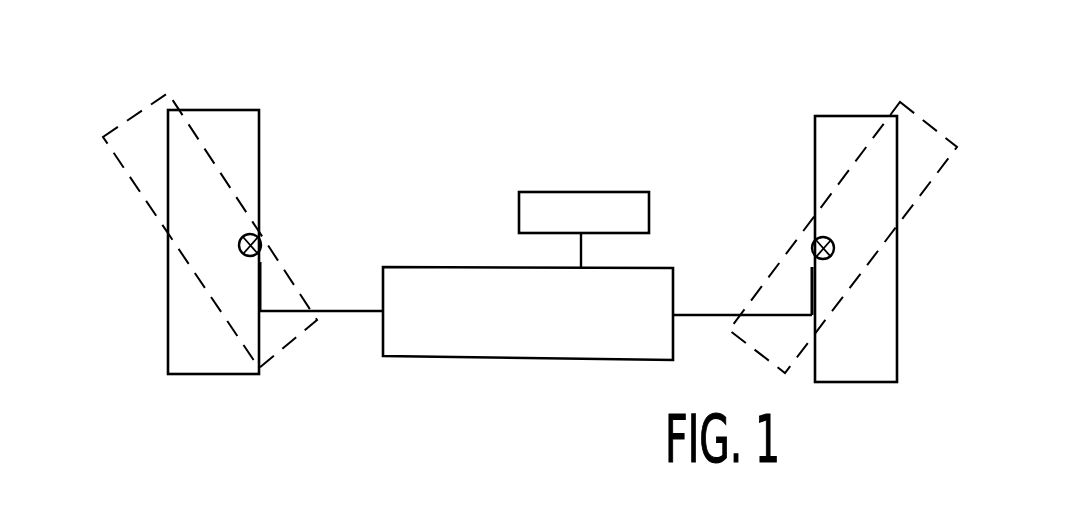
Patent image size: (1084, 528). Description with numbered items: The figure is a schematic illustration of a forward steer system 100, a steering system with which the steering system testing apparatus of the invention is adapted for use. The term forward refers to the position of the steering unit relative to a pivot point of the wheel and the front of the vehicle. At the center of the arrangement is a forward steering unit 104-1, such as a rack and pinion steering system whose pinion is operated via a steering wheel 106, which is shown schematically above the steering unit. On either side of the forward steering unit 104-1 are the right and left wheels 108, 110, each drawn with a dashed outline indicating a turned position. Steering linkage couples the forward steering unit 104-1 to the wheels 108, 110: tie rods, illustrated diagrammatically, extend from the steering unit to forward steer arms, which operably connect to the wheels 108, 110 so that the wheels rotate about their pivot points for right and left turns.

The forward steer system 100 is at (632, 107).
The forward steering unit 104-1 is at (438, 266).
The steering wheel 106 is at (606, 192).
The wheel 108 is at (205, 111).
The wheel 110 is at (847, 118).